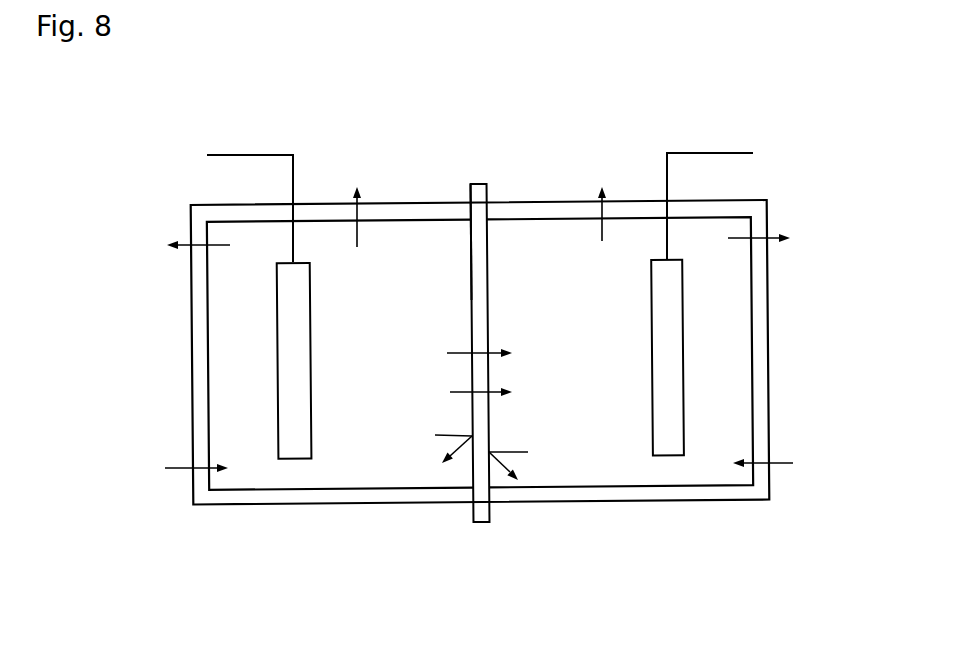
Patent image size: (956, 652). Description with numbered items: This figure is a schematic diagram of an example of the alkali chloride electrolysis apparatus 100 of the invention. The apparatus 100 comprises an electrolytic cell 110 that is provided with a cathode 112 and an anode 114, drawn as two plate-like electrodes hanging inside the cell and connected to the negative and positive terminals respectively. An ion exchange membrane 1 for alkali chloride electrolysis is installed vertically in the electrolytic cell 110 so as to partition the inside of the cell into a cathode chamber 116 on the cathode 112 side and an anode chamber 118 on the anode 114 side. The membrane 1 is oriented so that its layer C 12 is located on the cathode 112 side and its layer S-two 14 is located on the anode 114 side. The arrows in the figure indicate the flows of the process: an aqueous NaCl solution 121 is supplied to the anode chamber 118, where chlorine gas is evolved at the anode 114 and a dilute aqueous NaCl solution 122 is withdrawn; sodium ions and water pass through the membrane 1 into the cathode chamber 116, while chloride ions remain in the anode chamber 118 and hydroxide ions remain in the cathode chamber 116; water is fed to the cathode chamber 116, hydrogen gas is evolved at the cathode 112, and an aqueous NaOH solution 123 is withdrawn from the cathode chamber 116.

The alkali chloride electrolysis apparatus 100 is at (405, 121).
The electrolytic cell 110 is at (273, 504).
The anode chamber 118 is at (378, 470).
The cathode chamber 116 is at (622, 468).
The layer (C) 12 is at (490, 303).
The layer (S-2) 14 is at (470, 263).
The ion exchange membrane for alkali chloride electrolysis 1 is at (481, 538).
The anode 114 is at (278, 348).
The cathode 112 is at (683, 333).
The dilute aqueous NaCl solution 122 is at (174, 247).
The aqueous NaCl solution 121 is at (173, 470).
The aqueous NaOH solution 123 is at (780, 239).